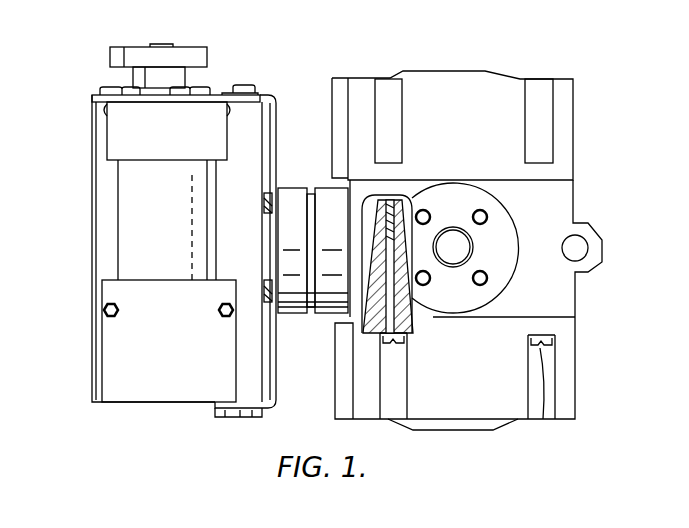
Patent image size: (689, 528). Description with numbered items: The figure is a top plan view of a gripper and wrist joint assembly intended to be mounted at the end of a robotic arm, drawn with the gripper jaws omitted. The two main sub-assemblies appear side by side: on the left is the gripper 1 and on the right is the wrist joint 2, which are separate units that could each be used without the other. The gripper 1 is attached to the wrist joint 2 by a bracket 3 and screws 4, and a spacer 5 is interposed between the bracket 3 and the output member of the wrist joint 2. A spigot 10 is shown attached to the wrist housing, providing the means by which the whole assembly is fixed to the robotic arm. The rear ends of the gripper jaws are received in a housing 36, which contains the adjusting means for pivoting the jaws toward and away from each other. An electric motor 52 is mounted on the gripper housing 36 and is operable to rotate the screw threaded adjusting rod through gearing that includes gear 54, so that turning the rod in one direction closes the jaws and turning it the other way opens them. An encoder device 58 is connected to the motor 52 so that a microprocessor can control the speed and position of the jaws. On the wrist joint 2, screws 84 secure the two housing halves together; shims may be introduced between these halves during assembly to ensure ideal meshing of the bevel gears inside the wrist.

The gripper 1 is at (170, 251).
The wrist joint 2 is at (590, 416).
The bracket 3 is at (277, 102).
The screws 4 is at (266, 278).
The spacer 5 is at (292, 200).
The spigot 10 is at (473, 242).
The housing 36 is at (102, 263).
The electric motor 52 is at (123, 217).
The gear 54 is at (204, 54).
The encoder device 58 is at (110, 348).
The screws 84 is at (363, 327).